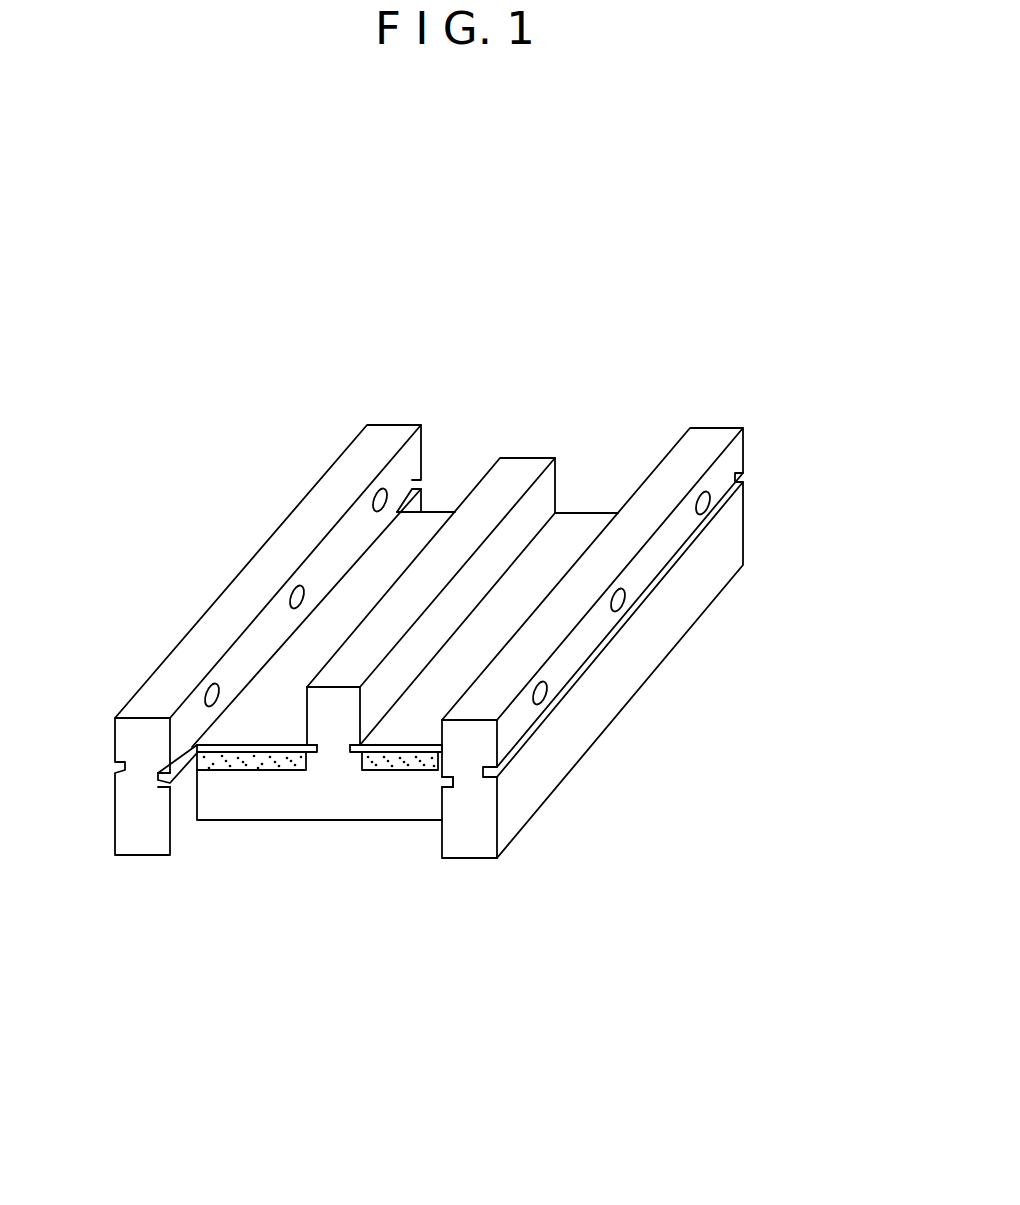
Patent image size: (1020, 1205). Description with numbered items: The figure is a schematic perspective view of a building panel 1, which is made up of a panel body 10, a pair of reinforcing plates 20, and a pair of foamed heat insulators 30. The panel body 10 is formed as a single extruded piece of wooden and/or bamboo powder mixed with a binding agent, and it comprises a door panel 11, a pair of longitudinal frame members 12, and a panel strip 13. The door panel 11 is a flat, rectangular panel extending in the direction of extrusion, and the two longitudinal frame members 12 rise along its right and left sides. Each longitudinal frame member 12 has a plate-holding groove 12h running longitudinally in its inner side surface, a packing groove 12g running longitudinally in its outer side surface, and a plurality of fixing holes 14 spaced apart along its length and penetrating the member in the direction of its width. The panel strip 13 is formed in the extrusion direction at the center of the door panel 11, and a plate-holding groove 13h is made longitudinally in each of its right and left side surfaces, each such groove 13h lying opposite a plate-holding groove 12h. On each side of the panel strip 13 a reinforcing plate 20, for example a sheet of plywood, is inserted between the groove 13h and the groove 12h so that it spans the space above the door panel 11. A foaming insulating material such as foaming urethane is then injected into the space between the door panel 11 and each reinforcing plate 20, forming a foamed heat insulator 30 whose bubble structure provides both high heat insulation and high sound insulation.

The building panel 1 is at (276, 392).
The panel body 10 is at (224, 530).
The door panel 11 is at (335, 797).
The longitudinal frame member 12 is at (498, 600).
The packing groove 12g is at (663, 566).
The plate-holding groove 12h is at (165, 778).
The panel strip 13 is at (440, 612).
The plate-holding groove 13h is at (318, 749).
The fixing hole 14 is at (545, 693).
The reinforcing plate 20 is at (309, 642).
The foamed heat insulator 30 is at (225, 762).